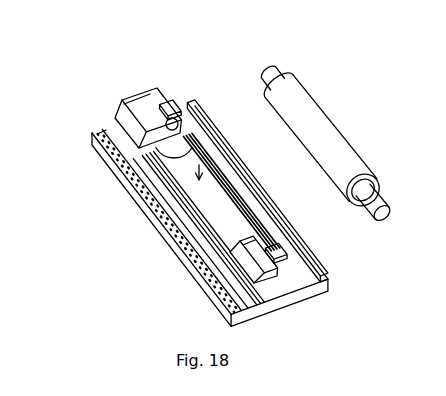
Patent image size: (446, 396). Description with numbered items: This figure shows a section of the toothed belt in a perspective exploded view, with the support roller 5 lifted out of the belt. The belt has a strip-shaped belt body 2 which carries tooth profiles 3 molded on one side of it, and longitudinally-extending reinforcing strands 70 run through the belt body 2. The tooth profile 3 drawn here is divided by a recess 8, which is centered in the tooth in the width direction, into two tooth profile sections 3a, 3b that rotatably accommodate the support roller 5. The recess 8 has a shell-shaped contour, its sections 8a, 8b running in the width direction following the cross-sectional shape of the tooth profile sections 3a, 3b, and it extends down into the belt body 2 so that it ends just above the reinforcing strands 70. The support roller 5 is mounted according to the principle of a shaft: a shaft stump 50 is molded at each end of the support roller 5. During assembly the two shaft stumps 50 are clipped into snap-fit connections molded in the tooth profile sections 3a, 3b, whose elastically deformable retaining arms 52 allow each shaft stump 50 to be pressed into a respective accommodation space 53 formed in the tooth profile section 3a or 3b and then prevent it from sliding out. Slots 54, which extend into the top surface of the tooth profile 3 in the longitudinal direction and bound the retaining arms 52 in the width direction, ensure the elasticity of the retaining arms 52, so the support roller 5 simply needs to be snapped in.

The belt body 2 is at (318, 291).
The tooth profile 3 is at (138, 95).
The tooth profile section 3a is at (250, 283).
The tooth profile section 3b is at (115, 118).
The support roller 5 is at (330, 145).
The recess 8 is at (203, 160).
The section of recess 8a is at (190, 208).
The section of recess 8b is at (245, 214).
The shaft stump 50 is at (272, 62).
The retaining arm 52 is at (117, 153).
The accommodation space 53 is at (199, 140).
The slot 54 is at (167, 108).
The reinforcing strand 70 is at (120, 175).